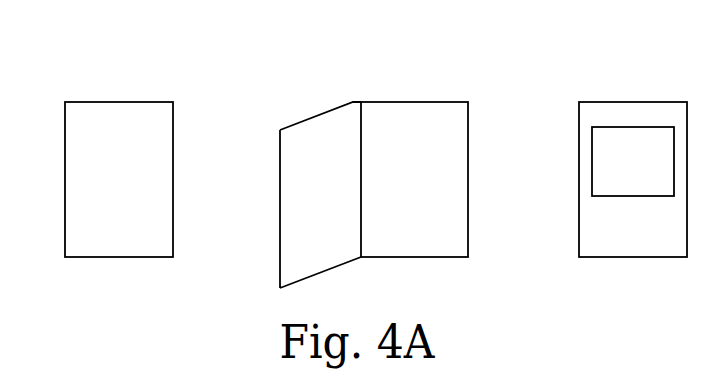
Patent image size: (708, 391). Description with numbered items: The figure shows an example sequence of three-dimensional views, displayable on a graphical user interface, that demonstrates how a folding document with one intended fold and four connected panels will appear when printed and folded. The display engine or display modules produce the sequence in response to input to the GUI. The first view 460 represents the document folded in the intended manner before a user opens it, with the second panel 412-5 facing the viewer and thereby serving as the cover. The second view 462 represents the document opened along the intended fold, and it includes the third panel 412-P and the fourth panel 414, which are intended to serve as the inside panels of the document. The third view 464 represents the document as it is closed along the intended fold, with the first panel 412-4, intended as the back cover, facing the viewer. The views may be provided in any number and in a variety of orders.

The first view 460 is at (73, 63).
The second panel 412-5 is at (136, 102).
The second view 462 is at (336, 63).
The fourth panel 414 is at (304, 122).
The third panel 412-P is at (439, 102).
The third view 464 is at (590, 66).
The first panel 412-4 is at (655, 102).